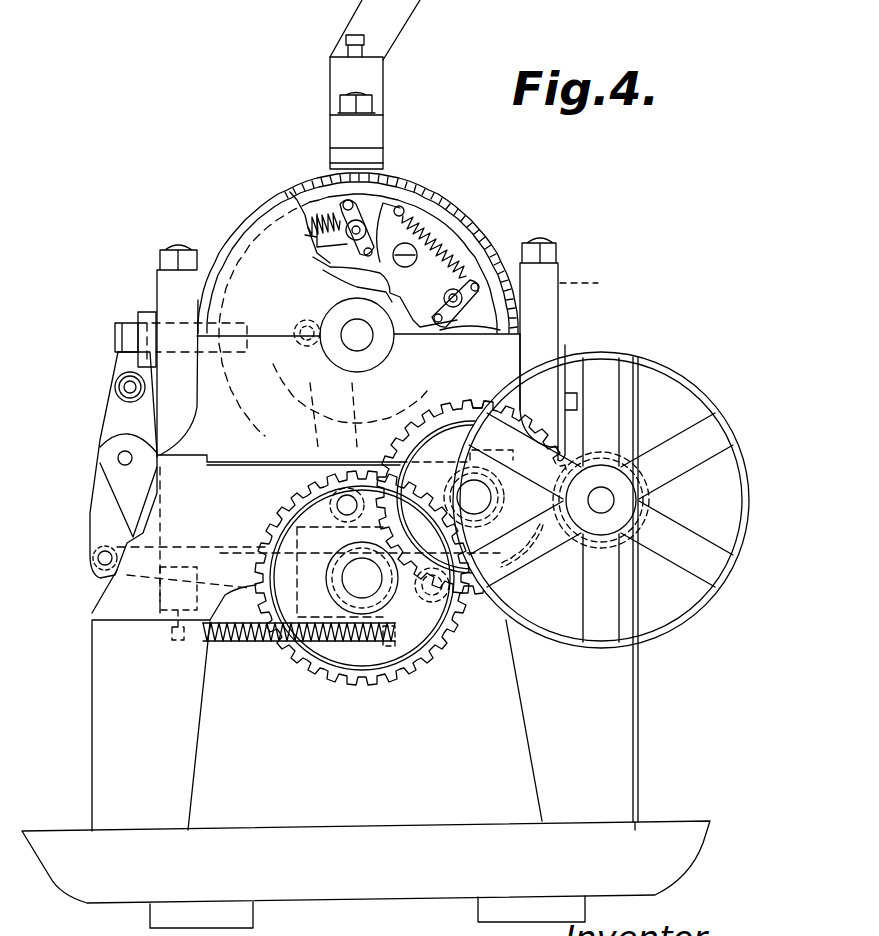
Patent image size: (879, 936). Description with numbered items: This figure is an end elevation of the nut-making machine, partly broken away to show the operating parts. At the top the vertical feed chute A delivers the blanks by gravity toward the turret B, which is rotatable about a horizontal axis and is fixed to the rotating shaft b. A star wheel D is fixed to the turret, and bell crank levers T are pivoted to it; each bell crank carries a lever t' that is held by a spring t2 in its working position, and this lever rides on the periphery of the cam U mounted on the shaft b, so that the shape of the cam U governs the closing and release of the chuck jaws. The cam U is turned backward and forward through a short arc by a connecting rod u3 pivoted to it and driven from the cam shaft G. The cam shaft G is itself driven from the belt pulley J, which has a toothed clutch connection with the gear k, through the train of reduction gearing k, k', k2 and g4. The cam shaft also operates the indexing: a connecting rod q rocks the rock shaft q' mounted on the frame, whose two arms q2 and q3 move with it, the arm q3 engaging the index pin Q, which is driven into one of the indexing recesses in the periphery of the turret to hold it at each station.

The vertical feed chute A is at (383, 95).
The cam U is at (357, 268).
The rotating shaft b is at (357, 335).
The star wheel D is at (410, 203).
The turret B is at (447, 210).
The bell crank lever T is at (385, 265).
The lever t' is at (466, 305).
The spring t2 is at (447, 253).
The gear k is at (601, 500).
The gear k2 is at (510, 509).
The gear k' is at (473, 489).
The belt pulley J is at (681, 626).
The cam shaft G is at (362, 578).
The connecting rod u3 is at (308, 412).
The gear g4 is at (243, 640).
The connecting rod q is at (156, 603).
The rock shaft q' is at (91, 454).
The arm q2 is at (117, 358).
The arm q3 is at (98, 507).
The index pin Q is at (122, 322).